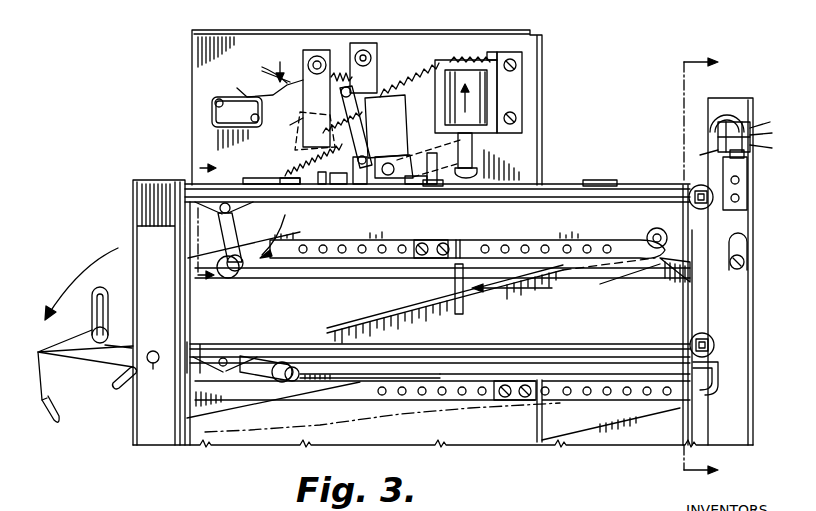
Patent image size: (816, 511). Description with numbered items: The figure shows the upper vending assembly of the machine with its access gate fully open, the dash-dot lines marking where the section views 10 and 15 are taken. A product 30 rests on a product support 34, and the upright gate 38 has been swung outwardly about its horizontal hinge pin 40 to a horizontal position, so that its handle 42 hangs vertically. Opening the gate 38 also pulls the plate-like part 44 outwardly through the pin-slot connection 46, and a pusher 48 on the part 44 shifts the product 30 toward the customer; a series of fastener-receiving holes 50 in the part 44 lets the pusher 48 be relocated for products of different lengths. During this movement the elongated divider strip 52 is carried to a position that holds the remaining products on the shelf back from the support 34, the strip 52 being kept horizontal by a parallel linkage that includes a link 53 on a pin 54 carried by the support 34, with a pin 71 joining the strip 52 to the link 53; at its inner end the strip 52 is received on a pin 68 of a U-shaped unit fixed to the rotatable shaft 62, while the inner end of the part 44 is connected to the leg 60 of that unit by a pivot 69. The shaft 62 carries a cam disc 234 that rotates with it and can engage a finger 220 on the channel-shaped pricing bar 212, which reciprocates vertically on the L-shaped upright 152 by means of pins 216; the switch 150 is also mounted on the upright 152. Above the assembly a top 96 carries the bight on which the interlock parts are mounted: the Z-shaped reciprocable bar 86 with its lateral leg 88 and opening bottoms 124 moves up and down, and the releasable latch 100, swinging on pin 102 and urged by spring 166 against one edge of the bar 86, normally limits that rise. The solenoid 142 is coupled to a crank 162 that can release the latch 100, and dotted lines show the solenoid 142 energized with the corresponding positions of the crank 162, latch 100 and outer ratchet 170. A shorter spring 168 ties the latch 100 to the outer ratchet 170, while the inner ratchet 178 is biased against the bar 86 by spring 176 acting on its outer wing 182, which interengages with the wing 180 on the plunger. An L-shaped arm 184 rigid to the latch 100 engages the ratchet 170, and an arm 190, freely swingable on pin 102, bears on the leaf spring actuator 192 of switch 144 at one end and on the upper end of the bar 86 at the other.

The section line 10- 10 is at (720, 267).
The section line 15- 15 is at (211, 222).
The product 30 is at (478, 437).
The product support 34 is at (279, 345).
The gate 38 is at (88, 358).
The hinge pin 40 is at (153, 369).
The handle 42 is at (120, 386).
The plate-like part 44 is at (582, 240).
The pin-slot connection 46 is at (92, 330).
The pusher 48 is at (464, 304).
The fastener-receiving holes 50 is at (503, 244).
The divider strip 52 is at (322, 272).
The link 53 is at (237, 236).
The pin 54 is at (222, 214).
The leg 60 is at (666, 228).
The rotatable shaft 62 is at (697, 188).
The pin 68 is at (682, 274).
The pivot 69 is at (648, 252).
The pin 71 is at (236, 278).
The reciprocable device 86 is at (336, 178).
The leg 88 is at (356, 180).
The top 96 is at (556, 138).
The releasable latch means 100 is at (316, 56).
The pin 102 is at (362, 50).
The bottom 124 is at (406, 182).
The solenoid 142 is at (480, 80).
The switch 144 is at (217, 116).
The switch 150 is at (718, 135).
The L-shaped upright 152 is at (747, 190).
The crank 162 is at (445, 174).
The spring 166 is at (473, 54).
The shorter spring 168 is at (346, 66).
The outer ratchet 170 is at (378, 70).
The spring 176 is at (303, 160).
The inner ratchet 178 is at (389, 78).
The wing 180 is at (363, 180).
The outer wing 182 is at (383, 156).
The L-shaped arm 184 is at (302, 126).
The arm 190 is at (265, 65).
The leaf spring actuator 192 is at (240, 88).
The pricing bar 212 is at (740, 414).
The pin 216 is at (746, 260).
The finger 220 is at (707, 370).
The cam disc 234 is at (712, 196).